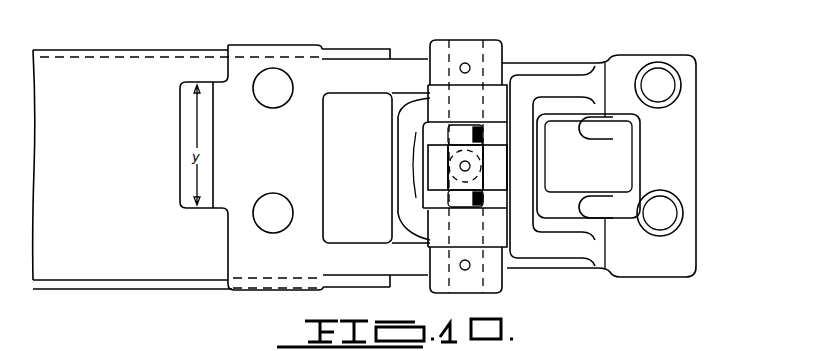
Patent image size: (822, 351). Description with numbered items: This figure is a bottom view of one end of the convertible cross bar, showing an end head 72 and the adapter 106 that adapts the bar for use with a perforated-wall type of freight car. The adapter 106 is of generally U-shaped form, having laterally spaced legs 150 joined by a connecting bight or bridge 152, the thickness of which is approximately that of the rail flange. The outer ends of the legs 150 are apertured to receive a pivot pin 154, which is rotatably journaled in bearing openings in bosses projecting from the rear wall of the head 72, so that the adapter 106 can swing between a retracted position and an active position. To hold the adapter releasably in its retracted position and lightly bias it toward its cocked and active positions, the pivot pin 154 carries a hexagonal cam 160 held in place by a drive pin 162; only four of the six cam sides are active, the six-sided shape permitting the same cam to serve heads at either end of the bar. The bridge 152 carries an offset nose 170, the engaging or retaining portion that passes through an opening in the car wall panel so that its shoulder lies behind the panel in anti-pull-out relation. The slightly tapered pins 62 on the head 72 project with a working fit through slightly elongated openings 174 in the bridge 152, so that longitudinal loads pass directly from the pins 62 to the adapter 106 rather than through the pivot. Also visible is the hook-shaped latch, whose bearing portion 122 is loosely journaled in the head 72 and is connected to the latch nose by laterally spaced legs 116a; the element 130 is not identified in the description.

The offset nose 170 is at (181, 118).
The openings 174 is at (272, 68).
The adapter 106 is at (353, 81).
The legs 150 is at (405, 62).
The bight or bridge 152 is at (305, 156).
The hexagonal cam 160 is at (437, 168).
The pivot pin 154 is at (460, 195).
The drive pin 162 is at (470, 168).
The latch member 130 is at (540, 158).
The bearing portion 122 is at (625, 163).
The end head 72 is at (698, 153).
The pins 62 is at (672, 83).
The legs 116a is at (613, 118).